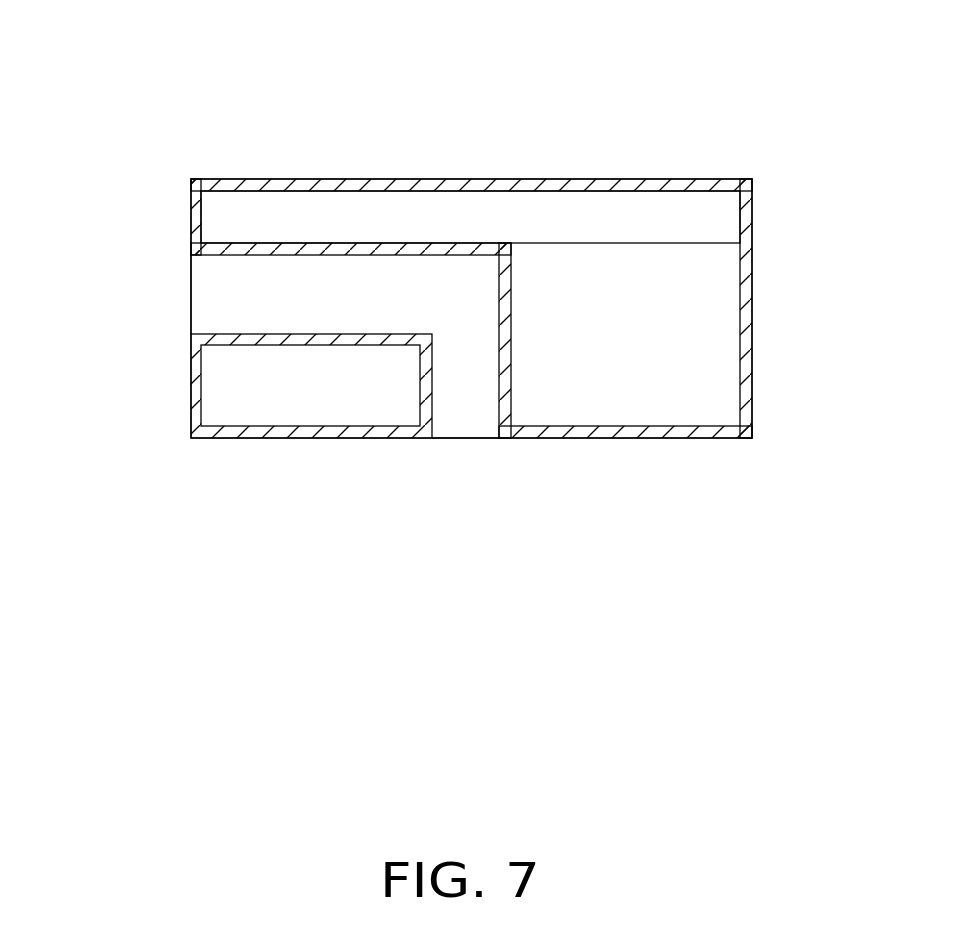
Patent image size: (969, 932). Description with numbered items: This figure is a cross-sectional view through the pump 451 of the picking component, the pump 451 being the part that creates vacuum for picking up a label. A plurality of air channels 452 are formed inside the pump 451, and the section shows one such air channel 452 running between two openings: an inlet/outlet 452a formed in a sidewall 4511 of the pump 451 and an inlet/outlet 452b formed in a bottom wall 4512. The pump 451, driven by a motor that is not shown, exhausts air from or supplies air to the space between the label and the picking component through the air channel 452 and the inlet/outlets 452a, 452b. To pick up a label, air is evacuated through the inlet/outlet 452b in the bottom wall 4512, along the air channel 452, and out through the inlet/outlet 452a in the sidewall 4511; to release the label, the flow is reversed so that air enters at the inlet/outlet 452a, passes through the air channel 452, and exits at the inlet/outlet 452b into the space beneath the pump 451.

The pump 451 is at (378, 56).
The sidewall 4511 is at (198, 204).
The bottom wall 4512 is at (671, 432).
The air channel 452 is at (351, 297).
The inlet/outlet 452a is at (208, 290).
The inlet/outlet 452b is at (460, 420).